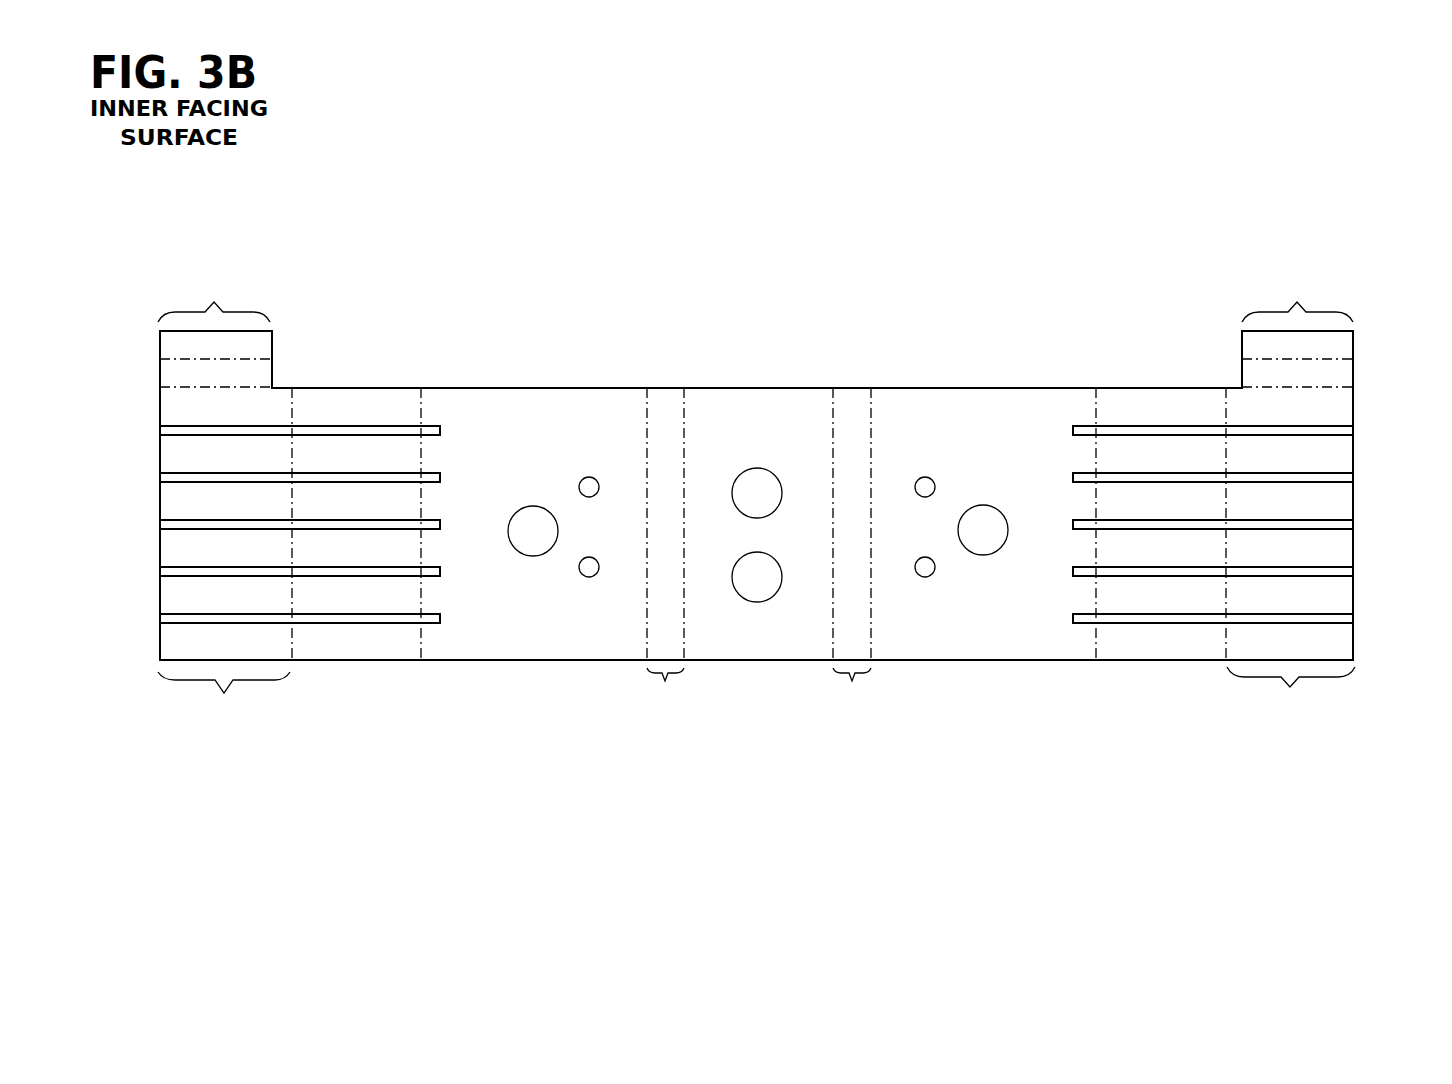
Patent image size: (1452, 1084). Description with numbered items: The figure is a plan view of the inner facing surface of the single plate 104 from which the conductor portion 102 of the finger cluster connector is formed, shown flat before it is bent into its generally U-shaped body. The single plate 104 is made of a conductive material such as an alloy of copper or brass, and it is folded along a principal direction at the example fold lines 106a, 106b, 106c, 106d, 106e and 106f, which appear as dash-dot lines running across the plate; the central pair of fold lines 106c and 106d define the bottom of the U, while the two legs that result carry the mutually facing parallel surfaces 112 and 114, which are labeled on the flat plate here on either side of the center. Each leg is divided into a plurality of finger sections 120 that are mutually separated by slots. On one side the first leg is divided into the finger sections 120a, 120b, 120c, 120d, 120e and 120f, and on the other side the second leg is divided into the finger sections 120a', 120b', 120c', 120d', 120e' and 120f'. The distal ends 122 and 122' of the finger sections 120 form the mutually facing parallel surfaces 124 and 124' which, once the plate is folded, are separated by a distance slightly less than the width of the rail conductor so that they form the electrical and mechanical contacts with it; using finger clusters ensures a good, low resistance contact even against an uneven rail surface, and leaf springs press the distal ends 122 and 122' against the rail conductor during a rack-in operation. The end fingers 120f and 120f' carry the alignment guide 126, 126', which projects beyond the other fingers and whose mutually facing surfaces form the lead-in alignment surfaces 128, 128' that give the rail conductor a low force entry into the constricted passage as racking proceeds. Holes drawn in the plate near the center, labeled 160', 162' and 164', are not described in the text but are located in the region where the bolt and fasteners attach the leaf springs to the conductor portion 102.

The conductor portion 102 is at (696, 218).
The single plate 104 is at (787, 317).
The fold line 106a is at (290, 675).
The fold line 106b is at (422, 677).
The fold line 106c is at (660, 695).
The fold line 106d is at (847, 692).
The fold line 106e is at (1075, 688).
The fold line 106f is at (1218, 687).
The mutually facing parallel surface 112 is at (542, 441).
The mutually facing parallel surface 114 is at (977, 444).
The finger sections 120 is at (1230, 825).
The finger section 120a is at (1387, 630).
The finger section 120b is at (1387, 588).
The finger section 120c is at (1387, 543).
The finger section 120d is at (1387, 495).
The finger section 120e is at (1387, 453).
The finger section 120f is at (1388, 405).
The finger section 120a' is at (115, 626).
The finger section 120b' is at (115, 586).
The finger section 120c' is at (115, 541).
The finger section 120d' is at (115, 491).
The finger section 120e' is at (115, 448).
The finger section 120f' is at (116, 401).
The distal end 122 is at (1323, 770).
The distal end 122' is at (178, 775).
The mutually facing parallel surface 124 is at (1291, 691).
The mutually facing parallel surface 124' is at (224, 695).
The alignment guide 126 is at (1338, 360).
The alignment guide 126' is at (172, 361).
The lead-in alignment surface 128 is at (1297, 296).
The lead-in alignment surface 128' is at (214, 296).
The large hole 160' is at (745, 691).
The small hole 162' is at (736, 677).
The central holes 164' is at (750, 687).